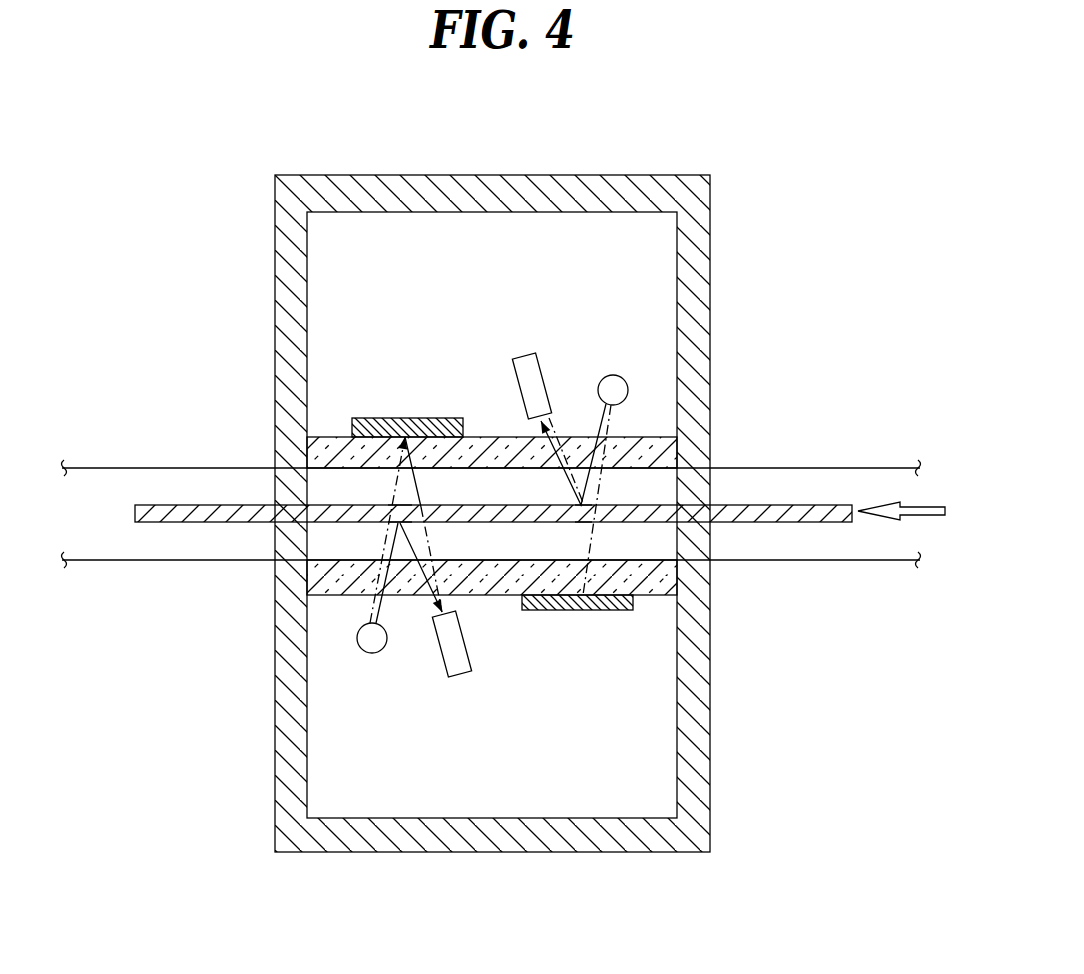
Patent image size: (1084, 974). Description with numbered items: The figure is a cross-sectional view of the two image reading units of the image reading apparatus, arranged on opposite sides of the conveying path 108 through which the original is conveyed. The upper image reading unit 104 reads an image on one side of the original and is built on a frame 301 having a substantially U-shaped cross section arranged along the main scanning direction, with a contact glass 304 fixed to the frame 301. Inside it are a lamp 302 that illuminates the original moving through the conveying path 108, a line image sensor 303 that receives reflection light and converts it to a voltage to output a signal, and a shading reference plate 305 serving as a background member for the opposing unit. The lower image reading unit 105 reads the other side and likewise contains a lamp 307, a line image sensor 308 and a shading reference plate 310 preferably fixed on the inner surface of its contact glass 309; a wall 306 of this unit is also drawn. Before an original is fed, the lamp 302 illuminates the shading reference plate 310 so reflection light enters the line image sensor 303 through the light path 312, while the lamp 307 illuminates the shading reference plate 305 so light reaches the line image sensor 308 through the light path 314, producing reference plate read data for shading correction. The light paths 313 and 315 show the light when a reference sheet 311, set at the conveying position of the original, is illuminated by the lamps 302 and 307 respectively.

The image reading unit 104 is at (510, 176).
The image reading unit 105 is at (487, 854).
The conveying path 108 is at (840, 473).
The frame 301 is at (282, 393).
The lamp 302 is at (614, 375).
The line image sensor 303 is at (523, 352).
The contact glass 304 is at (318, 447).
The shading reference plate 305 is at (403, 418).
The housing wall 306 is at (708, 650).
The lamp 307 is at (372, 653).
The line image sensor 308 is at (458, 677).
The contact glass 309 is at (665, 576).
The shading reference plate 310 is at (586, 612).
The reference sheet 311 is at (750, 503).
The light path 312 is at (588, 543).
The light path 313 is at (587, 487).
The light path 314 is at (395, 495).
The light path 315 is at (393, 552).